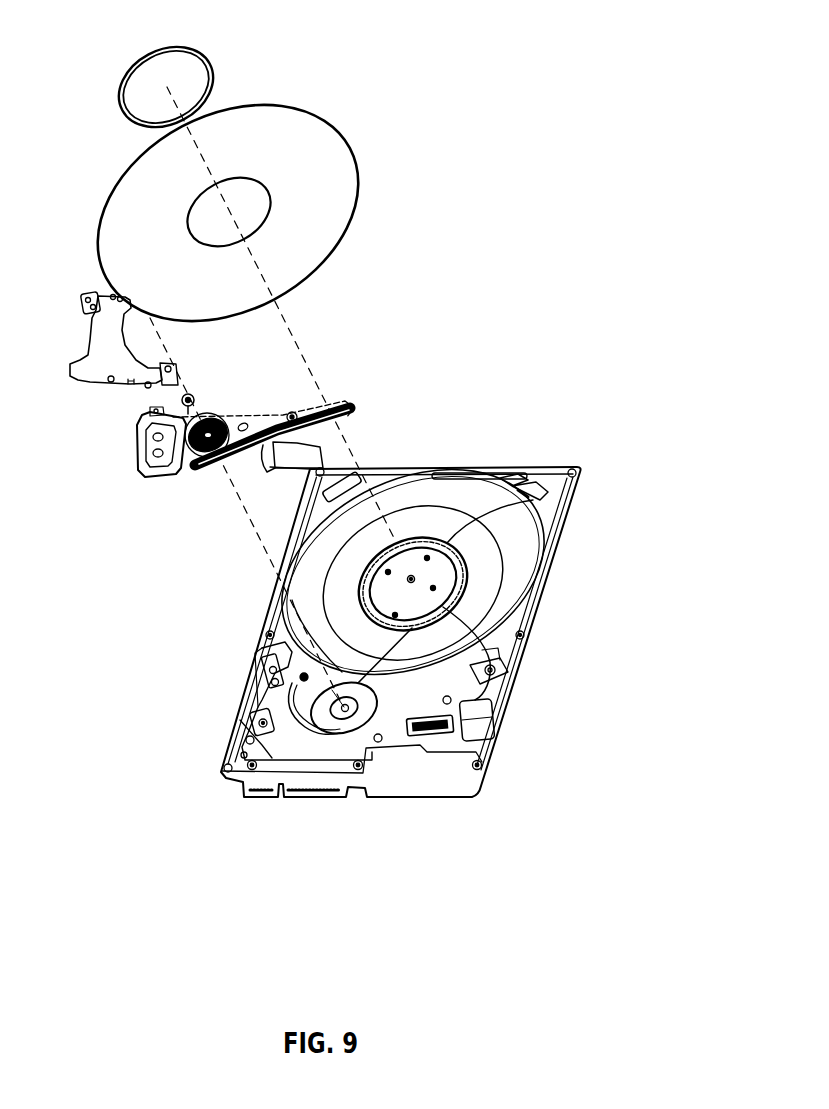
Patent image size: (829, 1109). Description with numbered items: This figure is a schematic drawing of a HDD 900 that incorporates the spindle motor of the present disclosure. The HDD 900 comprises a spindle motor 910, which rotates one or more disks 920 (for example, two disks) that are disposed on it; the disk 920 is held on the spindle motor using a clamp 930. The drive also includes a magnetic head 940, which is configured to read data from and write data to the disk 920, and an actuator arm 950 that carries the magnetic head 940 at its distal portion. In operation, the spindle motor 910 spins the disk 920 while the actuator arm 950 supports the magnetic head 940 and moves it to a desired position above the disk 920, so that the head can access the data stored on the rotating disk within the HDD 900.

The HDD 900 is at (445, 64).
The spindle motor 910 is at (533, 476).
The disk 920 is at (360, 205).
The clamp 930 is at (214, 71).
The magnetic head 940 is at (352, 400).
The actuator arm 950 is at (140, 445).